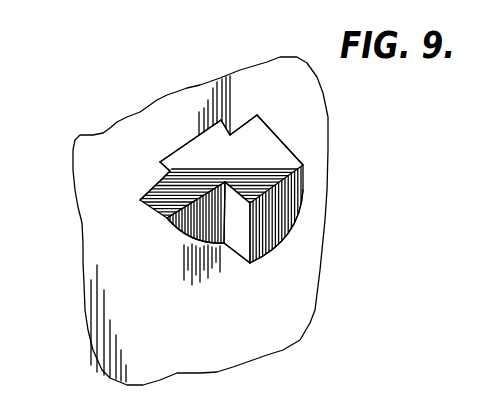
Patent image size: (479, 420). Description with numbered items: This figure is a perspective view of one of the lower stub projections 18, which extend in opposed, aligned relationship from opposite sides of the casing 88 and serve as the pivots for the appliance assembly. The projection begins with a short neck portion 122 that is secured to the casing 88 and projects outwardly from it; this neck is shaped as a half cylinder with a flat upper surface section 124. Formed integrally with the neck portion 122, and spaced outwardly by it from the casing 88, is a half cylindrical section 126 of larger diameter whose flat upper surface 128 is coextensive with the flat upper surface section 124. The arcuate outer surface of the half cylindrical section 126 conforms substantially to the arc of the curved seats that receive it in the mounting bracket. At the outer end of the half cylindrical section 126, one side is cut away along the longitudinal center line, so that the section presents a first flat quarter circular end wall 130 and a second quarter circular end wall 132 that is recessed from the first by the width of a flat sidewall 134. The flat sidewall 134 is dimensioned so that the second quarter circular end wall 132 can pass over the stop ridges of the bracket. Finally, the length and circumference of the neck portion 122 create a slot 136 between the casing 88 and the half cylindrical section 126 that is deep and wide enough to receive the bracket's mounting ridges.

The lower stub projection 18 is at (310, 147).
The casing 88 is at (203, 337).
The neck portion 122 is at (158, 177).
The flat upper surface section 124 is at (198, 158).
The half cylindrical section 126 is at (297, 190).
The flat upper surface 128 is at (258, 150).
The first flat quarter circular end wall 130 is at (273, 221).
The second quarter circular end wall 132 is at (186, 240).
The flat sidewall 134 is at (240, 242).
The slot 136 is at (233, 126).